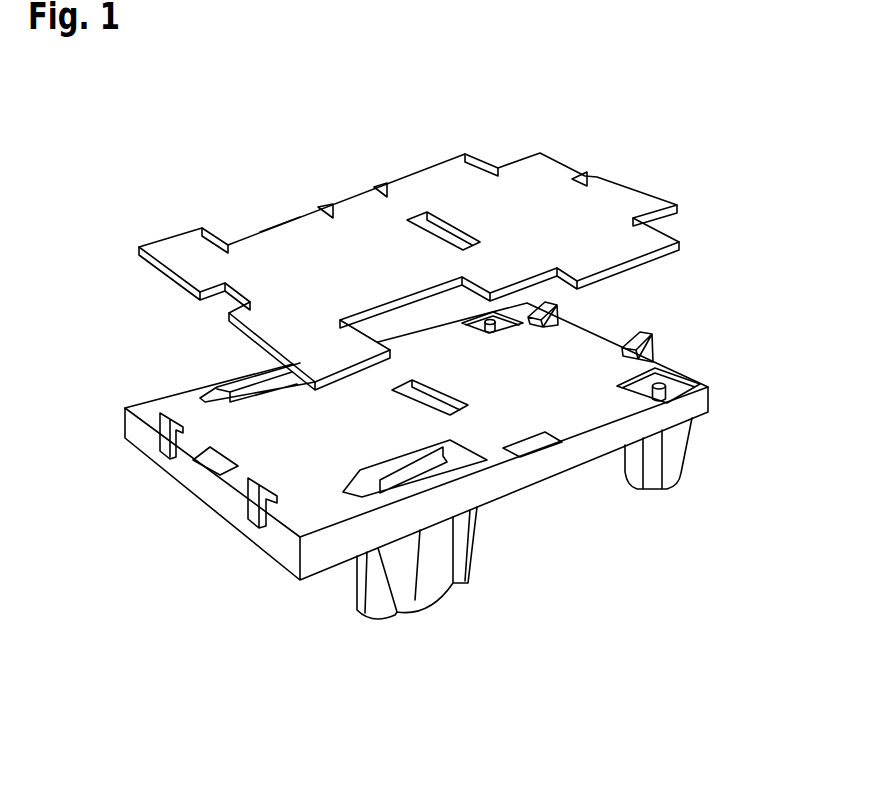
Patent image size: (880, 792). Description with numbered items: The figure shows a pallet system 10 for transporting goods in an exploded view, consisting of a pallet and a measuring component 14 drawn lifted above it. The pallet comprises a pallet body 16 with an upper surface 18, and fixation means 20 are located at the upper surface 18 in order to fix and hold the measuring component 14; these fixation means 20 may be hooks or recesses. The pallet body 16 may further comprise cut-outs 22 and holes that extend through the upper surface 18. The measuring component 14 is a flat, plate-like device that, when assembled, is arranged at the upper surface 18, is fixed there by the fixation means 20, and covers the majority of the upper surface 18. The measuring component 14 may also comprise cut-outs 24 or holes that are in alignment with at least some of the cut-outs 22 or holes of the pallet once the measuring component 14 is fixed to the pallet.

The pallet system 10 is at (216, 118).
The measuring component 14 is at (524, 177).
The pallet body 16 is at (706, 396).
The upper surface 18 is at (186, 405).
The fixation means 20 is at (557, 318).
The cut-outs 22 is at (453, 412).
The cut-outs 24 is at (283, 222).